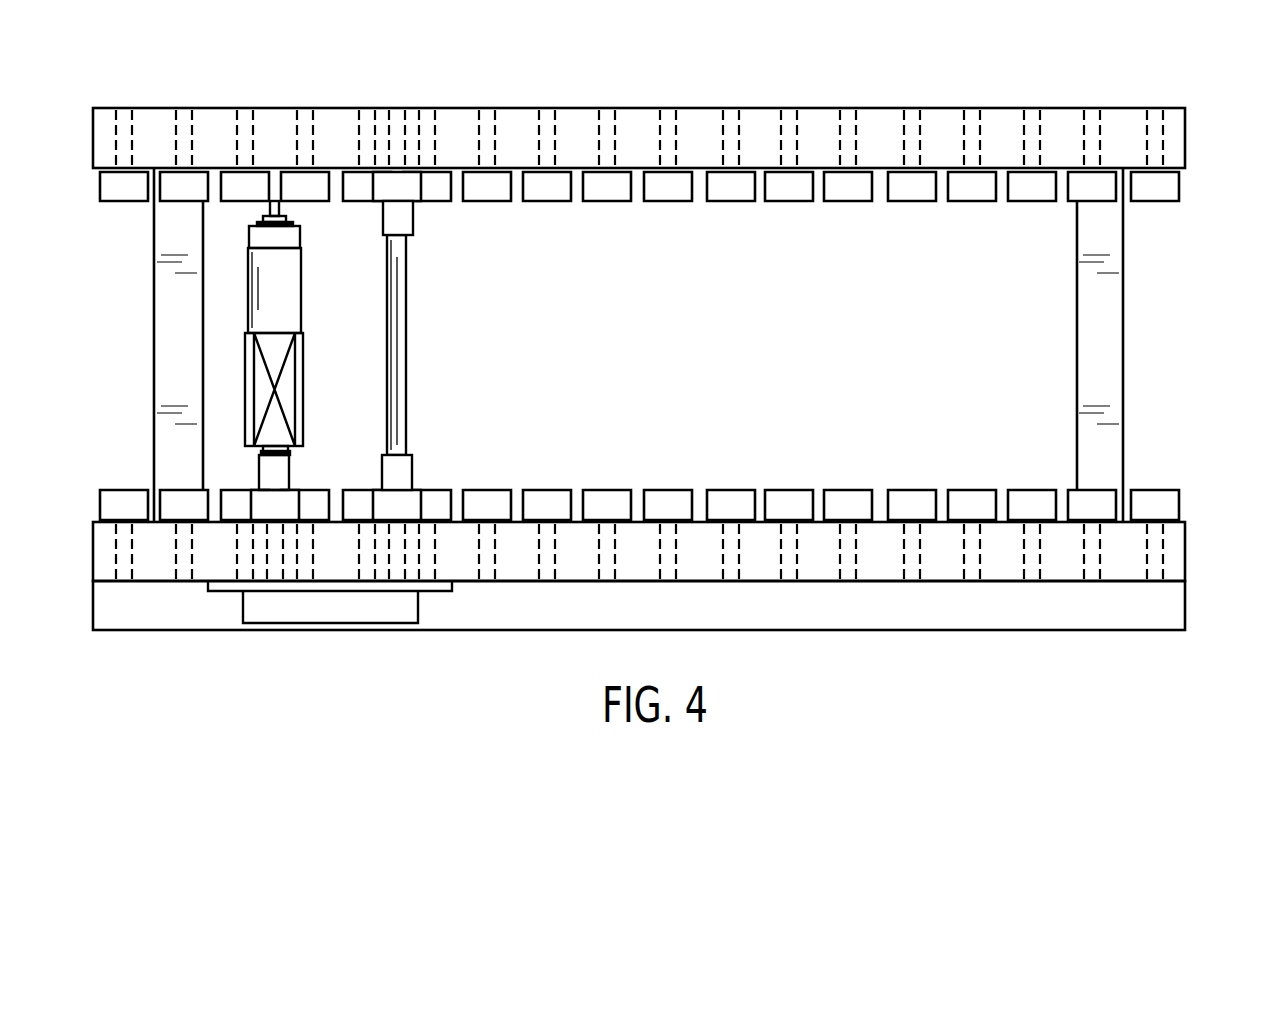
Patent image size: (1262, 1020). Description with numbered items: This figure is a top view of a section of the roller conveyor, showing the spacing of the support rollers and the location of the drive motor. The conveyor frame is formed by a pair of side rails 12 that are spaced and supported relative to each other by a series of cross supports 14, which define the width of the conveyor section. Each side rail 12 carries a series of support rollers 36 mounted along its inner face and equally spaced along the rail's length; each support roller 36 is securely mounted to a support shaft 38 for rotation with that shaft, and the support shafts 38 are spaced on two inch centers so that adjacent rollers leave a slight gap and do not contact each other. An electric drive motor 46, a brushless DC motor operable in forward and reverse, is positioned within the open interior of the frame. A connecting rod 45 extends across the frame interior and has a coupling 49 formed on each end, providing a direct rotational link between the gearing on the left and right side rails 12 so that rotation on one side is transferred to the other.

The side rails 12 is at (938, 73).
The cross supports 14 is at (1103, 347).
The support rollers 36 is at (1168, 508).
The support shaft 38 is at (1162, 551).
The connecting rod 45 is at (407, 345).
The drive motor 46 is at (285, 288).
The coupling 49 is at (400, 217).